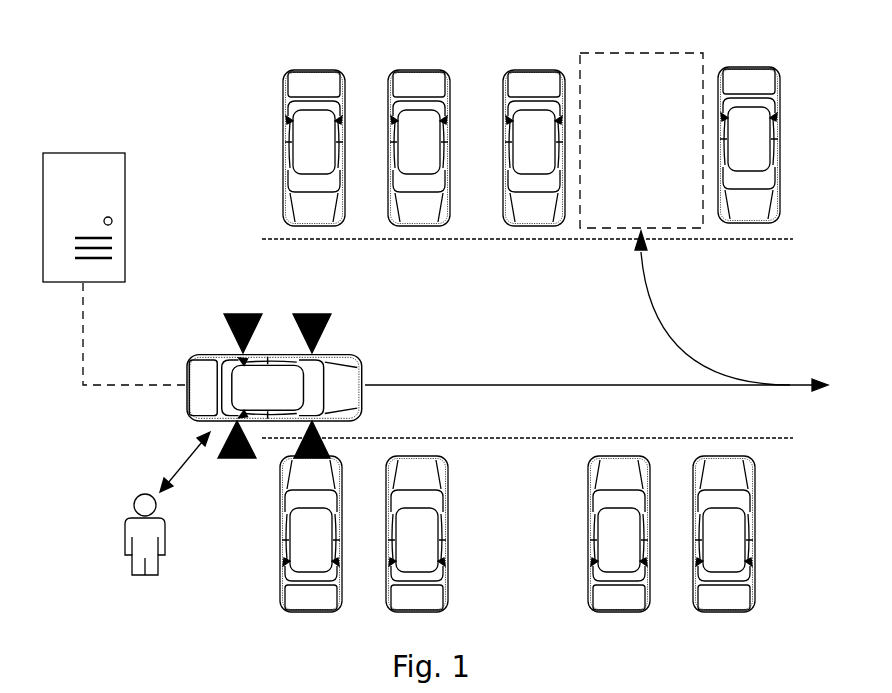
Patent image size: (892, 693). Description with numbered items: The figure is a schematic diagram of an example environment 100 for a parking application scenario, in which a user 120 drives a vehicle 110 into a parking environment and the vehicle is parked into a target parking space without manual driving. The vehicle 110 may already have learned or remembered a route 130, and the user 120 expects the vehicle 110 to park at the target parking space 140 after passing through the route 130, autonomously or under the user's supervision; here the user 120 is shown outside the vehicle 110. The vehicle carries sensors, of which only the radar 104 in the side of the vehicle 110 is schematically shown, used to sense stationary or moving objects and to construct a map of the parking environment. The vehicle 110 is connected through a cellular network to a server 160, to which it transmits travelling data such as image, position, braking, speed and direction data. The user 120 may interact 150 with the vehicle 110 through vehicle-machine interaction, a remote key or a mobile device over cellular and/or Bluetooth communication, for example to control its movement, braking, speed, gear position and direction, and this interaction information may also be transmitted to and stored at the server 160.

The example environment 100 is at (212, 42).
The radar 104 is at (318, 349).
The vehicle 110 is at (185, 352).
The user 120 is at (162, 543).
The route 130 is at (693, 350).
The target parking space 140 is at (663, 53).
The interaction 150 is at (175, 462).
The server 160 is at (70, 152).